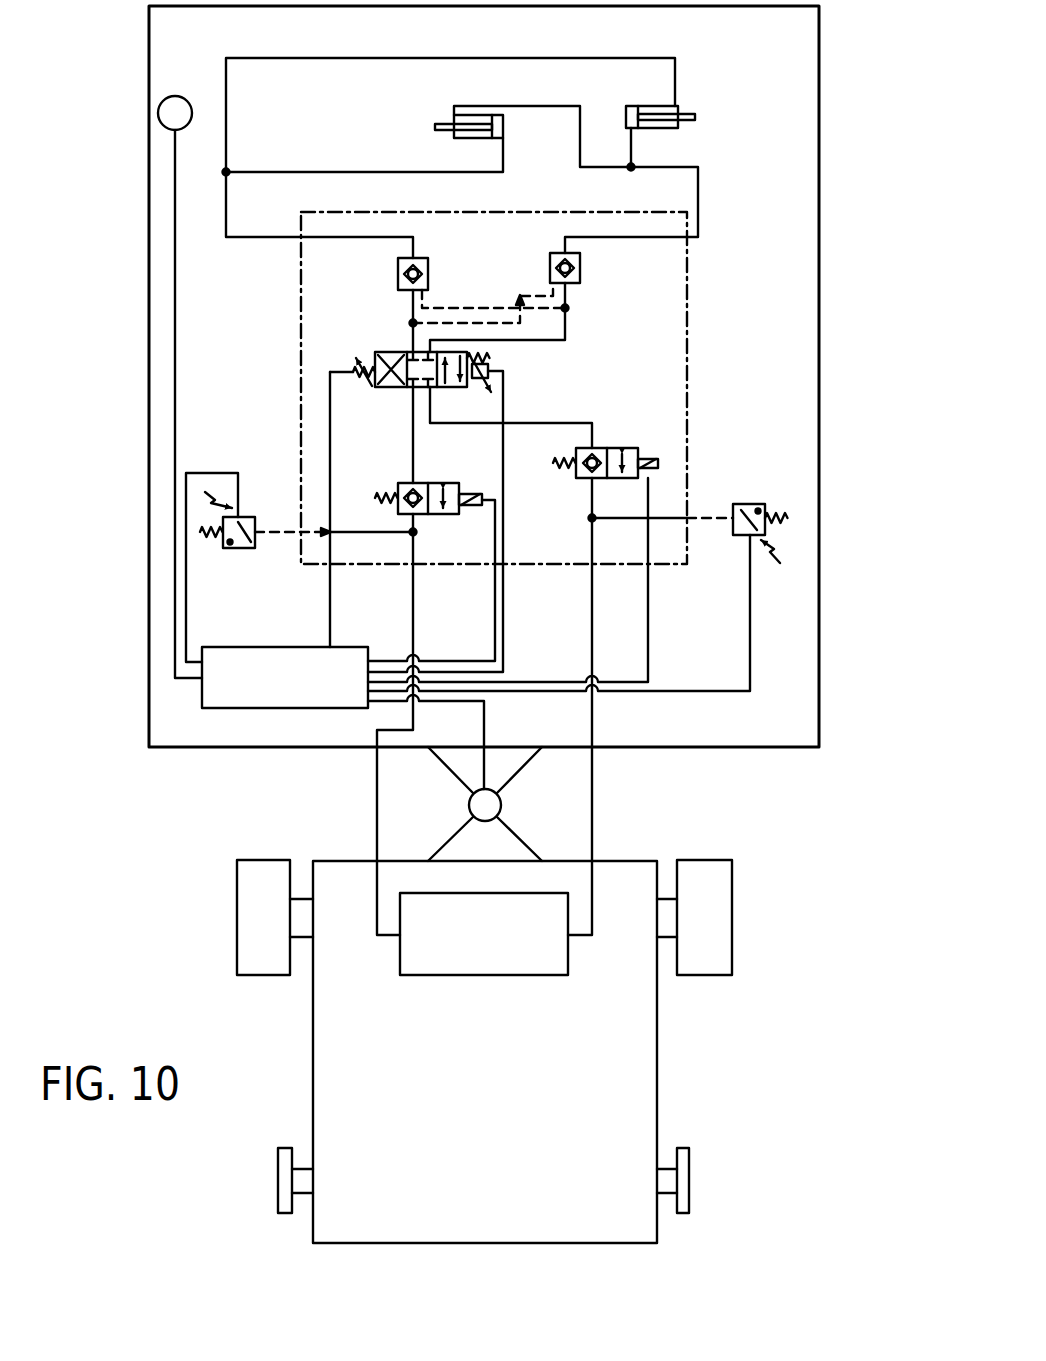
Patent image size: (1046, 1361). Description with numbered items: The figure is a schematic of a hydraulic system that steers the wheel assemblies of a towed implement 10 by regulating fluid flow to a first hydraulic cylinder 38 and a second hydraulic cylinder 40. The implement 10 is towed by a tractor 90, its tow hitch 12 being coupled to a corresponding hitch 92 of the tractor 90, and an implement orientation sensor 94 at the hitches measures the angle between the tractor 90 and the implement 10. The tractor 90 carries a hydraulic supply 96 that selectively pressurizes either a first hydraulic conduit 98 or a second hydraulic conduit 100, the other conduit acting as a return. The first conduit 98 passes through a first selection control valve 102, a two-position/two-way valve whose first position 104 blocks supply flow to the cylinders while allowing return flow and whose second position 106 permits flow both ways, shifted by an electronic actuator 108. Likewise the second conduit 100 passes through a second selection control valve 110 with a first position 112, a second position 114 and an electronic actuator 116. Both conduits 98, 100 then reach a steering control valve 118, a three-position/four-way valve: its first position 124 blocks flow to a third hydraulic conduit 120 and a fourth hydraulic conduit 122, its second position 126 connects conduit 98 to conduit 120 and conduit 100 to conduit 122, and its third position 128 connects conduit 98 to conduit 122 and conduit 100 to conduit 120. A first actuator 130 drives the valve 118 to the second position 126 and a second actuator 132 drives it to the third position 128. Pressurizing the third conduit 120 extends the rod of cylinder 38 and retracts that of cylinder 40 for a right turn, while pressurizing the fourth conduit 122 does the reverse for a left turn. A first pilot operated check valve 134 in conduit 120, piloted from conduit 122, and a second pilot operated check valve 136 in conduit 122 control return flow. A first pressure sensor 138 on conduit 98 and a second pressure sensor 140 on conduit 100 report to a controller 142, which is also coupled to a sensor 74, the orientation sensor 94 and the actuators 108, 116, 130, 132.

The implement 10 is at (820, 377).
The tow hitch 12 is at (515, 775).
The first hydraulic cylinder 38 is at (453, 98).
The second hydraulic cylinder 40 is at (640, 98).
The sensor 74 is at (176, 95).
The tractor 90 is at (657, 1052).
The hitch 92 is at (515, 838).
The implement orientation sensor 94 is at (468, 806).
The hydraulic supply 96 is at (480, 975).
The first hydraulic conduit 98 is at (377, 804).
The second hydraulic conduit 100 is at (592, 806).
The first selection control valve 102 is at (399, 478).
The first position 104 is at (392, 507).
The second position 106 is at (452, 515).
The electronic actuator 108 is at (477, 494).
The second selection control valve 110 is at (604, 434).
The first position 112 is at (579, 480).
The second position 114 is at (623, 447).
The electronic actuator 116 is at (660, 464).
The steering control valve 118 is at (392, 343).
The third hydraulic conduit 120 is at (254, 238).
The fourth hydraulic conduit 122 is at (626, 238).
The first position 124 is at (420, 389).
The second position 126 is at (450, 351).
The third position 128 is at (376, 352).
The first actuator 130 is at (490, 369).
The second actuator 132 is at (348, 366).
The first pilot operated check valve 134 is at (396, 273).
The second pilot operated check valve 136 is at (548, 268).
The first pressure sensor 138 is at (258, 516).
The second pressure sensor 140 is at (752, 504).
The controller 142 is at (246, 647).